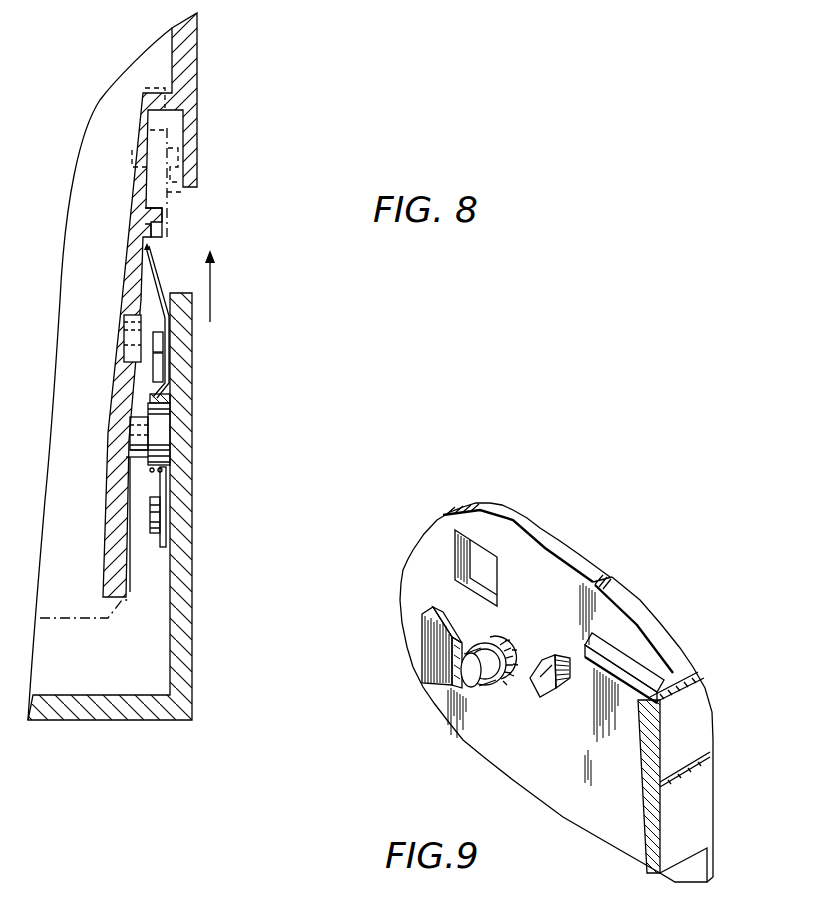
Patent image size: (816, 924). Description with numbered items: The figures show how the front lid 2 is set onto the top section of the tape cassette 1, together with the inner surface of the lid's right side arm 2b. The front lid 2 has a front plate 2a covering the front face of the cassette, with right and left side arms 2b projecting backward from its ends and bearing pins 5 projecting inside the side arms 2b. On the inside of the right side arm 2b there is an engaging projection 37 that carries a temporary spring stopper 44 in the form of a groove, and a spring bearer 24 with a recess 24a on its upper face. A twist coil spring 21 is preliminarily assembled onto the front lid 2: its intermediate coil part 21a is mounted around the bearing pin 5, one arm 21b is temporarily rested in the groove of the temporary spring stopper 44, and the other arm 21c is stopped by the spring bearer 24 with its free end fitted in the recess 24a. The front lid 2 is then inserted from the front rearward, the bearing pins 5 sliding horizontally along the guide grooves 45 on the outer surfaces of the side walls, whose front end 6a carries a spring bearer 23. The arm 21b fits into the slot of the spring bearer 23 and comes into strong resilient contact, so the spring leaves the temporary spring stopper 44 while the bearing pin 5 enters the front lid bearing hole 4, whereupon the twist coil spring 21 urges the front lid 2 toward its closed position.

In FIG. 8, the tape cassette 1 is at (206, 97).
In FIG. 9, the front lid 2 is at (678, 641).
In FIG. 9, the front plate 2a is at (680, 820).
In FIG. 9, the side arm 2b is at (545, 573).
In FIG. 8, the front lid bearing hole 4 is at (138, 352).
In FIG. 8, the bearing pin 5 is at (142, 432).
In FIG. 9, the bearing pin 5 is at (485, 680).
In FIG. 8, the front end of right side wall 6a is at (110, 487).
In FIG. 8, the twist coil spring 21 is at (153, 308).
In FIG. 8, the intermediate coil part 21a is at (167, 396).
In FIG. 8, the arm of twist coil spring 21b is at (146, 241).
In FIG. 8, the other arm of twist coil spring 21c is at (167, 517).
In FIG. 8, the spring bearer 23 is at (163, 225).
In FIG. 8, the spring bearer 24 is at (150, 517).
In FIG. 9, the spring bearer 24 is at (543, 692).
In FIG. 9, the recess 24a is at (555, 658).
In FIG. 8, the engaging projection 37 is at (158, 367).
In FIG. 9, the engaging projection 37 is at (442, 656).
In FIG. 8, the temporary spring stopper 44 is at (165, 338).
In FIG. 9, the temporary spring stopper 44 is at (448, 620).
In FIG. 8, the guide groove 45 is at (129, 557).